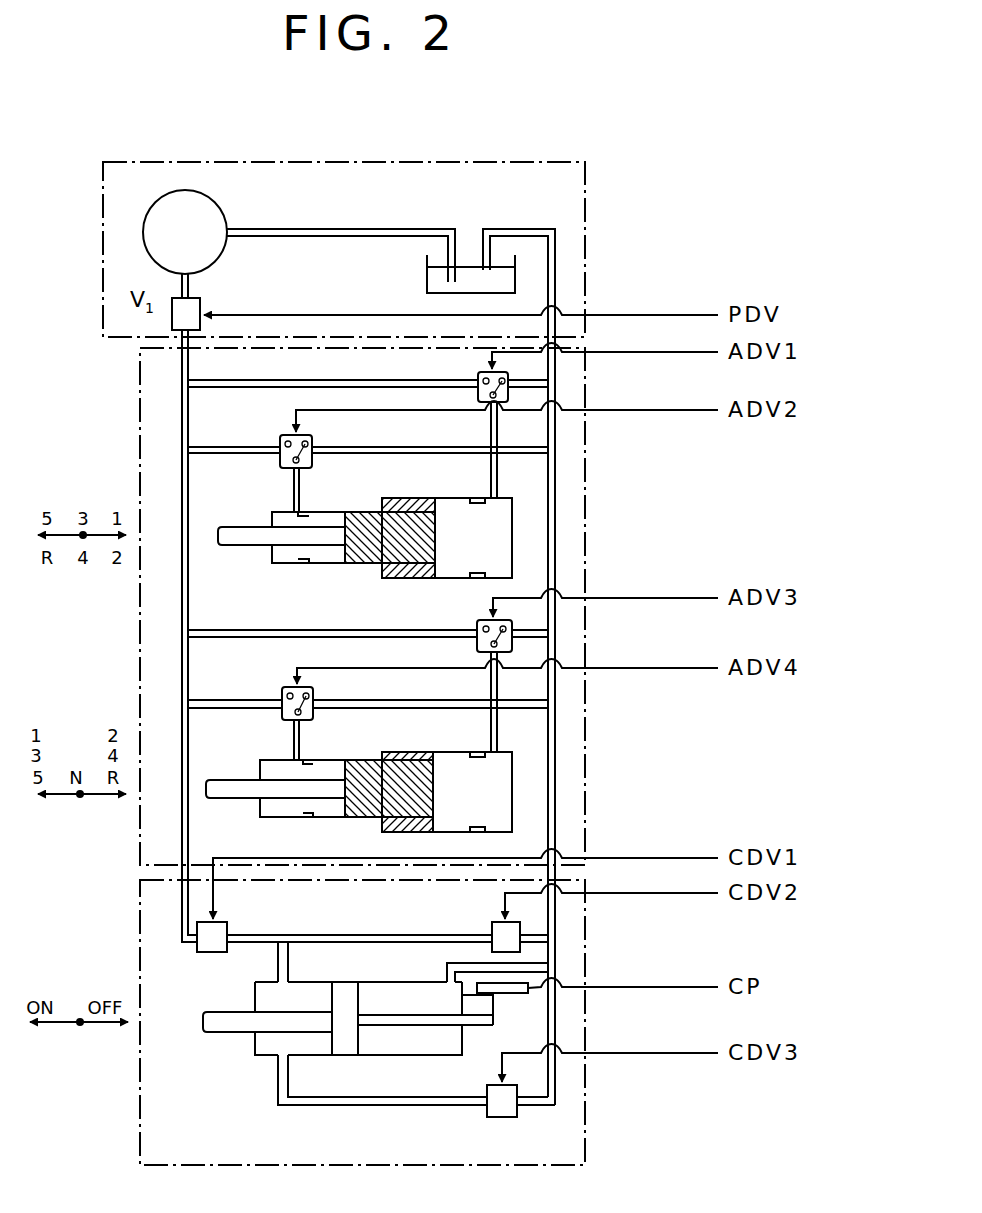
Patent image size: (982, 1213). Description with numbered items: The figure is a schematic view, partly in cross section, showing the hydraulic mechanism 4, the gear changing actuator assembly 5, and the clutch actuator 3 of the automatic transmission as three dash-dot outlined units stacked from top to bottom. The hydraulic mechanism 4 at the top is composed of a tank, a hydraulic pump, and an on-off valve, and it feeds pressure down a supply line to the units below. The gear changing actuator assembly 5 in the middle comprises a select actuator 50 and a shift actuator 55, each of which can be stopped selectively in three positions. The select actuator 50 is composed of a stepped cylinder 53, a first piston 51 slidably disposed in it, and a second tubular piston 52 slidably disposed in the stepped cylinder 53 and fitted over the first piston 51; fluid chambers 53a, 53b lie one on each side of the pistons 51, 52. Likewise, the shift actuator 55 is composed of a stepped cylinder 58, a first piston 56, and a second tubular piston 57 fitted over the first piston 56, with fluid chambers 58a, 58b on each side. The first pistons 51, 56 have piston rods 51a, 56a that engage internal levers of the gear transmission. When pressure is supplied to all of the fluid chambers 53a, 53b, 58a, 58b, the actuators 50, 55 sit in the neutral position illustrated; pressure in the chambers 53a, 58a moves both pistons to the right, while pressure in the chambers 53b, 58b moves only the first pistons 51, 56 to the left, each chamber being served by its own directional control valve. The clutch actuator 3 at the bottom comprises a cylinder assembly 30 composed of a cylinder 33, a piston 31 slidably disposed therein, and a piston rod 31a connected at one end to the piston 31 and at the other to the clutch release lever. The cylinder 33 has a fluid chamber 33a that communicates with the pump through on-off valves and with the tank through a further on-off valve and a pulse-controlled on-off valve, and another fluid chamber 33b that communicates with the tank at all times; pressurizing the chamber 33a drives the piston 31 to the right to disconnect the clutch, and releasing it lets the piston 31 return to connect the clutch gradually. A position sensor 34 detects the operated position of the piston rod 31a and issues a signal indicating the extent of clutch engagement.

The clutch actuator 3 is at (148, 1143).
The hydraulic mechanism 4 is at (573, 210).
The gear changing actuator assembly 5 is at (158, 410).
The cylinder assembly 30 is at (353, 1049).
The piston 31 is at (340, 1057).
The piston rod 31a is at (232, 1015).
The cylinder 33 is at (355, 1049).
The fluid chamber 33a is at (270, 1045).
The fluid chamber 33b is at (437, 1045).
The position sensor 34 is at (520, 995).
The select actuator 50 is at (369, 540).
The first piston 51 is at (362, 552).
The piston rod 51a is at (238, 527).
The second tubular piston 52 is at (413, 575).
The stepped cylinder 53 is at (375, 534).
The fluid chamber 53a is at (280, 550).
The fluid chamber 53b is at (503, 522).
The shift actuator 55 is at (364, 782).
The first piston 56 is at (362, 812).
The piston rod 56a is at (227, 787).
The second tubular piston 57 is at (405, 750).
The stepped cylinder 58 is at (364, 780).
The fluid chamber 58a is at (262, 807).
The fluid chamber 58b is at (500, 765).